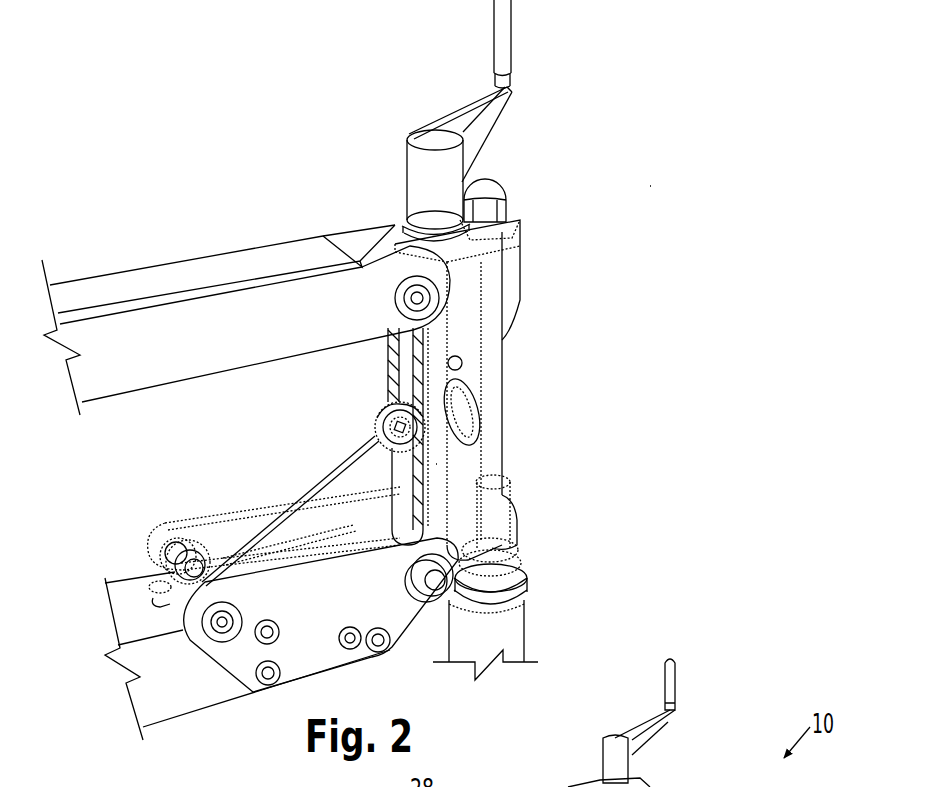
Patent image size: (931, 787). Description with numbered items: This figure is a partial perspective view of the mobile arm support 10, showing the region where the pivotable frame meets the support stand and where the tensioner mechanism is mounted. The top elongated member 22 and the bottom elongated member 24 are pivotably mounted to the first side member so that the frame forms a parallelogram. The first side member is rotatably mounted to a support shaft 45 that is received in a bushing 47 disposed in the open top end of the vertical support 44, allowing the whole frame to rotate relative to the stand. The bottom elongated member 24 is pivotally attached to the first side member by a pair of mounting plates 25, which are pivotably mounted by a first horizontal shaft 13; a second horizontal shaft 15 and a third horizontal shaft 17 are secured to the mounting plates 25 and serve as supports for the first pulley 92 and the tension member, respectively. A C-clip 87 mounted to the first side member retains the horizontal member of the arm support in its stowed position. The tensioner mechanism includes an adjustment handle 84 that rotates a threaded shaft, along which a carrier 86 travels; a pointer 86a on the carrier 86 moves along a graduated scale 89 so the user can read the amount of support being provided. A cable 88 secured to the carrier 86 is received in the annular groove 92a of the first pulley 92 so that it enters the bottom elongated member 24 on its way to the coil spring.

The mobile arm support 10 is at (652, 184).
The first horizontal shaft 13 is at (423, 590).
The second horizontal shaft 15 is at (217, 638).
The third horizontal shaft 17 is at (345, 648).
The top elongated member 22 is at (197, 260).
The bottom elongated member 24 is at (172, 728).
The mounting plates 25 is at (305, 643).
The vertical support 44 is at (523, 632).
The support shaft 45 is at (502, 344).
The bushing 47 is at (522, 575).
The adjustment handle 84 is at (513, 38).
The carrier 86 is at (373, 407).
The pointer 86a is at (423, 420).
The C-clip 87 is at (490, 390).
The cable 88 is at (318, 497).
The graduated scale 89 is at (440, 466).
The first pulley 92 is at (202, 550).
The annular groove 92a is at (180, 575).